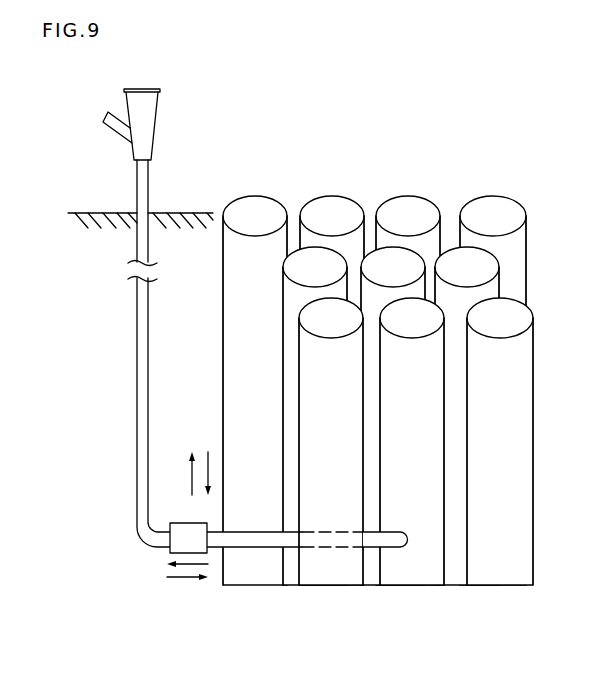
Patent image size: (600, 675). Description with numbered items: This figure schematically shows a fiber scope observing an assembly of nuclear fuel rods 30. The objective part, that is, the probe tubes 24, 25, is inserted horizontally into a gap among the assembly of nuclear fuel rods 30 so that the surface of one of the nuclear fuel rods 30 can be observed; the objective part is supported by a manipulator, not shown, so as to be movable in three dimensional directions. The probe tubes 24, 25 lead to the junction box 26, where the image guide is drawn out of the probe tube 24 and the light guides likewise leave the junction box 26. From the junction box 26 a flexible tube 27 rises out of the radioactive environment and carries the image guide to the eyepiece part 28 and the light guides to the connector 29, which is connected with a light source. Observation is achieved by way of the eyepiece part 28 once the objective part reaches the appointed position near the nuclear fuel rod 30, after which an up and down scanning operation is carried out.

The probe tube 24 is at (307, 589).
The probe tube 25 is at (245, 547).
The junction box 26 is at (182, 528).
The flexible tube 27 is at (137, 410).
The eyepiece part 28 is at (155, 105).
The connector 29 is at (116, 128).
The nuclear fuel rods 30 is at (255, 212).